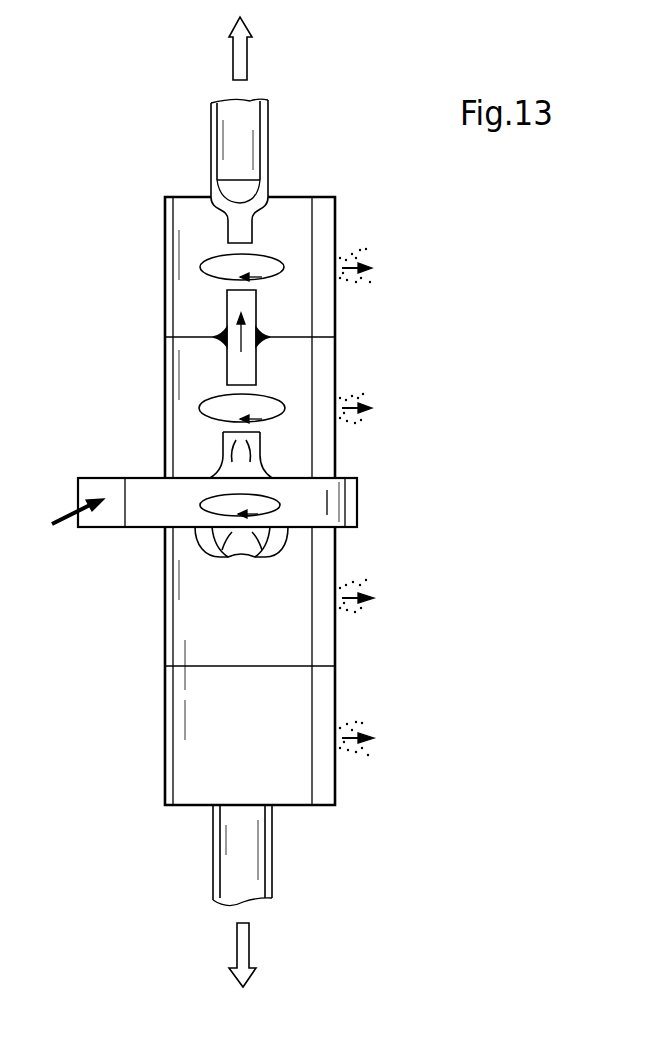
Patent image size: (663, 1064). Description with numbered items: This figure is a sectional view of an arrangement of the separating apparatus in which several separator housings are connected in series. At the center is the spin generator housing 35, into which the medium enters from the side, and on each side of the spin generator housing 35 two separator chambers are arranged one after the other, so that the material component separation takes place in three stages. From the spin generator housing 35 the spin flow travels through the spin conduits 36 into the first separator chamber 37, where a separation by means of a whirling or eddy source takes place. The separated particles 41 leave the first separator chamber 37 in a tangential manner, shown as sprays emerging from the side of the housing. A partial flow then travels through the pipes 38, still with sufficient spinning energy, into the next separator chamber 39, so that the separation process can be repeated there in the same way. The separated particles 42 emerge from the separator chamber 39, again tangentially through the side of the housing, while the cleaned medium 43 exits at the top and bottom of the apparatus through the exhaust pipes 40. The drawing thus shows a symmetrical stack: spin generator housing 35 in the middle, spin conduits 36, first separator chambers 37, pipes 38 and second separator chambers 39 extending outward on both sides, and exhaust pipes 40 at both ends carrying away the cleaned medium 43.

The spin generator housing 35 is at (345, 502).
The spin conduits 36 is at (222, 448).
The first separator chamber 37 is at (188, 372).
The pipes 38 is at (230, 312).
The separator chamber 39 is at (183, 230).
The exhaust pipes 40 is at (278, 212).
The separated particles 41 is at (365, 418).
The separated particles 42 is at (368, 274).
The cleaned medium 43 is at (247, 53).